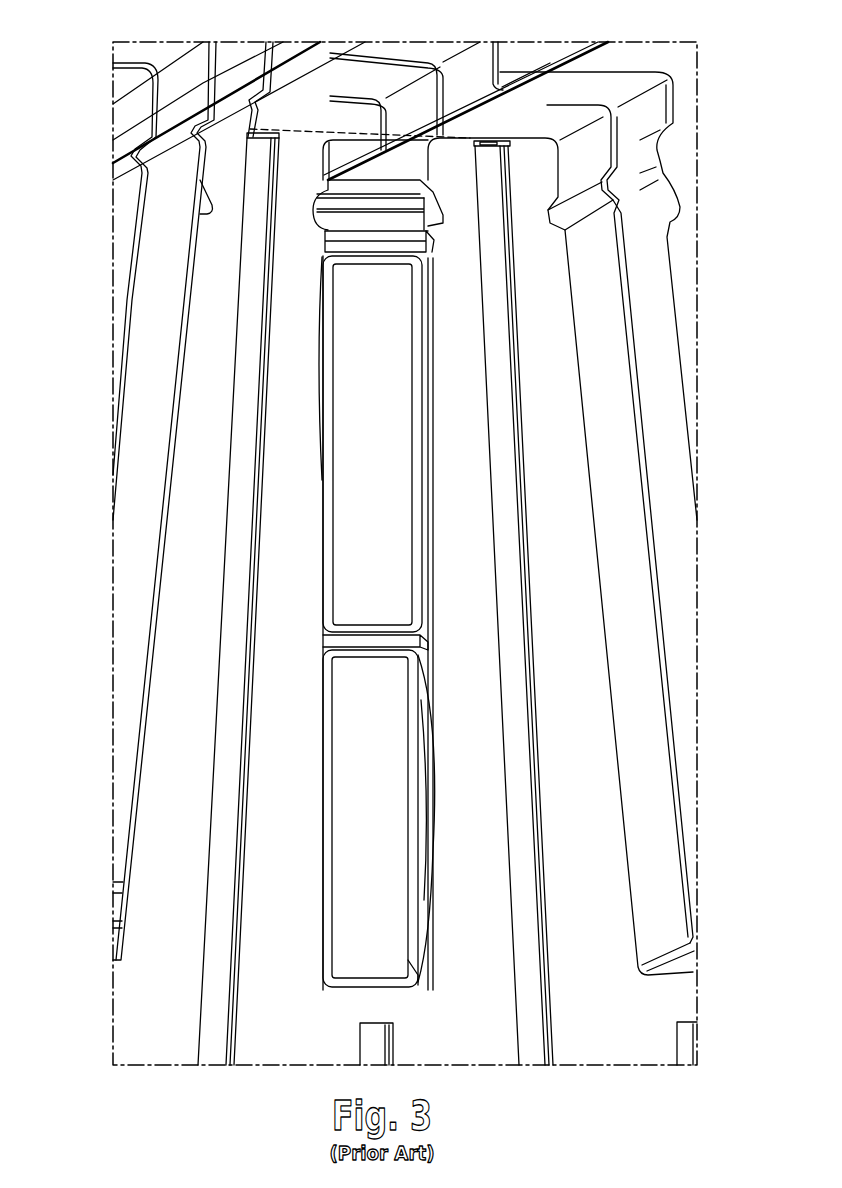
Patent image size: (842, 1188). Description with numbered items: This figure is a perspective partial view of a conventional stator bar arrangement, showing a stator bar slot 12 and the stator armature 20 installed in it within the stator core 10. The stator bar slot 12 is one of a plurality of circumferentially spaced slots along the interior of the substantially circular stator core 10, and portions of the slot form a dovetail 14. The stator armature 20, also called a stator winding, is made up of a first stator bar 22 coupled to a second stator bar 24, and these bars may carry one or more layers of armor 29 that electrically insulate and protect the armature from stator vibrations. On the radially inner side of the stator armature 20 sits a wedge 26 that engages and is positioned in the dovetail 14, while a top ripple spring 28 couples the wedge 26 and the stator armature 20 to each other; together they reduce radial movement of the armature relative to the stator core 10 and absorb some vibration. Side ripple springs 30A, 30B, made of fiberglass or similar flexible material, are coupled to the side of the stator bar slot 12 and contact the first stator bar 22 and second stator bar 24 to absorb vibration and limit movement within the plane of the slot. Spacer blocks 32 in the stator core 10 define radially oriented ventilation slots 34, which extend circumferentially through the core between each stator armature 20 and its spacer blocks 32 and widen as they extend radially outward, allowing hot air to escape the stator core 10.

The stator core 10 is at (691, 66).
The stator bar slot 12 is at (335, 131).
The dovetail 14 is at (443, 222).
The stator armature 20 is at (310, 639).
The first stator bar 22 is at (363, 541).
The second stator bar 24 is at (370, 734).
The wedge 26 is at (377, 187).
The top ripple spring 28 is at (377, 247).
The armor 29 is at (412, 950).
The side ripple spring 30A is at (320, 372).
The side ripple spring 30B is at (425, 712).
The spacer block 32 is at (217, 1012).
The ventilation slot 34 is at (647, 234).